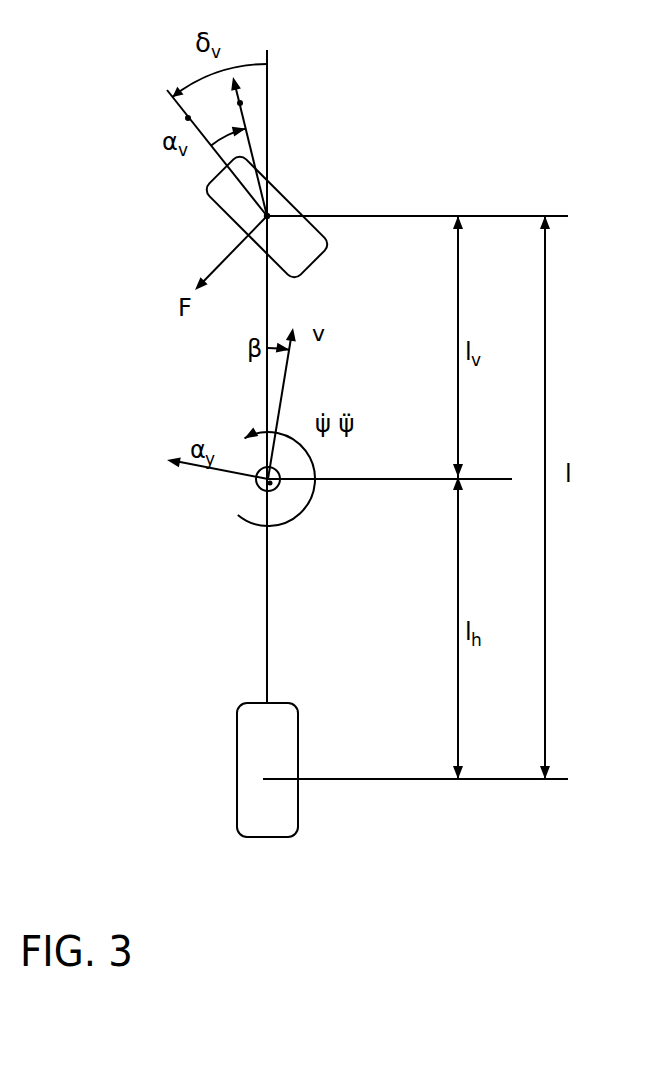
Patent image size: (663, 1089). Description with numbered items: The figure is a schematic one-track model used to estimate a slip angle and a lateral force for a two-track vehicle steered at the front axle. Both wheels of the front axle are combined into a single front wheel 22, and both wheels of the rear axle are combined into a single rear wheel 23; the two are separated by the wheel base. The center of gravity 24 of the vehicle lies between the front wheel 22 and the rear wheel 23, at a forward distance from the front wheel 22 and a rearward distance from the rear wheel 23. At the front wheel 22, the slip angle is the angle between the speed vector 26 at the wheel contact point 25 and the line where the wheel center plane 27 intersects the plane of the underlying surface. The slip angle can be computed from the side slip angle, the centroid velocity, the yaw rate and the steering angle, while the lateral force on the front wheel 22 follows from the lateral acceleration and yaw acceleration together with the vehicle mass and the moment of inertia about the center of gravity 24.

The front wheel 22 is at (283, 205).
The rear wheel 23 is at (274, 818).
The center of gravity 24 is at (270, 483).
The wheel contact point 25 is at (267, 216).
The speed vector 26 is at (240, 103).
The wheel center plane 27 is at (188, 118).